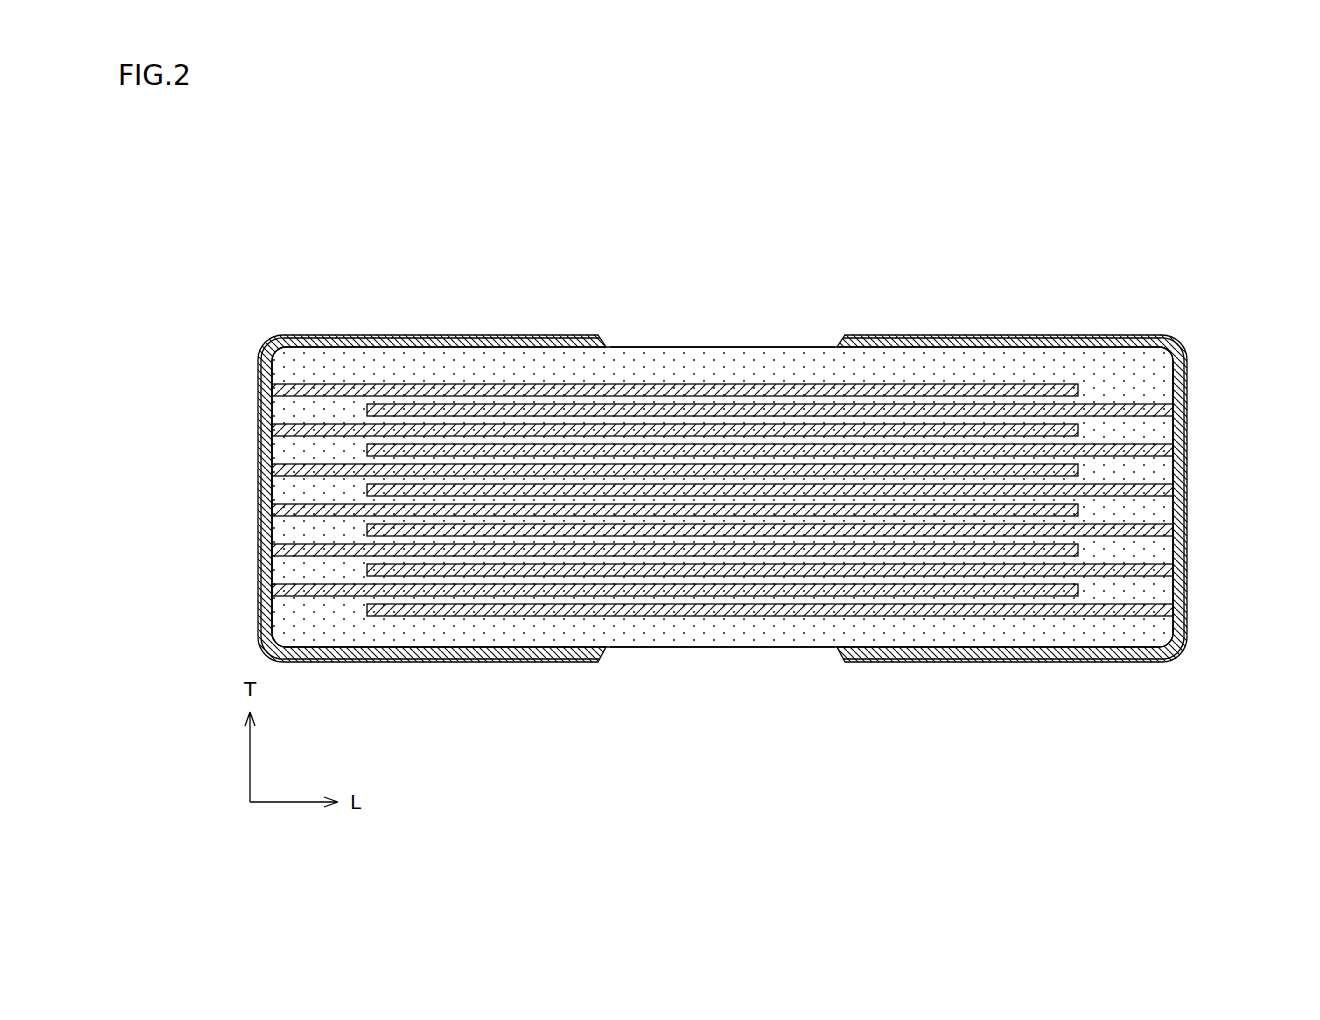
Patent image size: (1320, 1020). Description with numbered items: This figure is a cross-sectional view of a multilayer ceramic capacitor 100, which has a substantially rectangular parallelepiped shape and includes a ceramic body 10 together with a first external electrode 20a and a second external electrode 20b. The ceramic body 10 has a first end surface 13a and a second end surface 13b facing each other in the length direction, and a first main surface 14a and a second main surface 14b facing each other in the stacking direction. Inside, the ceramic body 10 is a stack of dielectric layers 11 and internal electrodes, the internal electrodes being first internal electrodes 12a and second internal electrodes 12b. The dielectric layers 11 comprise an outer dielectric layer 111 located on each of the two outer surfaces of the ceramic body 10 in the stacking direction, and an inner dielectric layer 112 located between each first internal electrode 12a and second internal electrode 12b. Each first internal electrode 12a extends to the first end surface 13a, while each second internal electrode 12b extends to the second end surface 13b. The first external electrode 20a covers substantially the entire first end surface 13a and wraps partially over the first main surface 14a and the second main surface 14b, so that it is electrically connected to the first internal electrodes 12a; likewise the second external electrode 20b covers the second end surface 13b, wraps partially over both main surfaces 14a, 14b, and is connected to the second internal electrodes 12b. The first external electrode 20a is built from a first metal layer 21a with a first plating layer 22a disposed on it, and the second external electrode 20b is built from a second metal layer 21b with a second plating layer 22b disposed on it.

The multilayer ceramic capacitor 100 is at (1022, 232).
The ceramic body 10 is at (656, 344).
The dielectric layer 11 is at (800, 235).
The outer dielectric layer 111 is at (725, 365).
The inner dielectric layer 112 is at (808, 425).
The first internal electrode 12a is at (935, 427).
The second internal electrode 12b is at (813, 576).
The first end surface 13a is at (258, 405).
The second end surface 13b is at (1187, 390).
The first main surface 14a is at (620, 345).
The second main surface 14b is at (644, 650).
The first external electrode 20a is at (258, 443).
The second external electrode 20b is at (1187, 422).
The first metal layer 21a is at (258, 512).
The second metal layer 21b is at (1187, 470).
The first plating layer 22a is at (258, 551).
The second plating layer 22b is at (1187, 506).